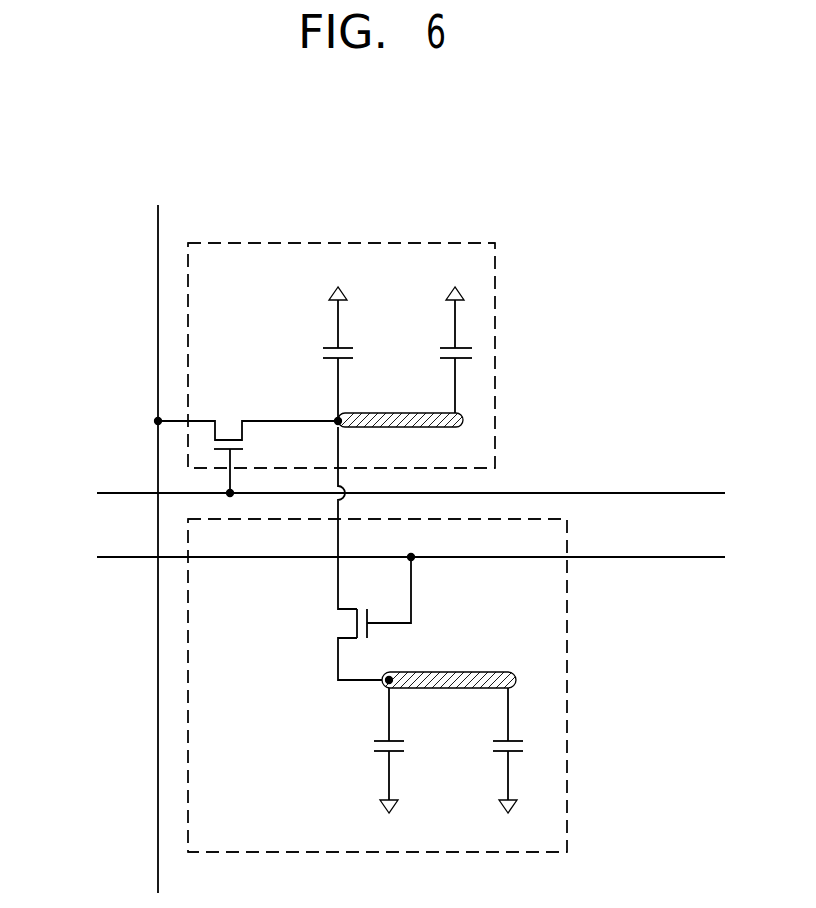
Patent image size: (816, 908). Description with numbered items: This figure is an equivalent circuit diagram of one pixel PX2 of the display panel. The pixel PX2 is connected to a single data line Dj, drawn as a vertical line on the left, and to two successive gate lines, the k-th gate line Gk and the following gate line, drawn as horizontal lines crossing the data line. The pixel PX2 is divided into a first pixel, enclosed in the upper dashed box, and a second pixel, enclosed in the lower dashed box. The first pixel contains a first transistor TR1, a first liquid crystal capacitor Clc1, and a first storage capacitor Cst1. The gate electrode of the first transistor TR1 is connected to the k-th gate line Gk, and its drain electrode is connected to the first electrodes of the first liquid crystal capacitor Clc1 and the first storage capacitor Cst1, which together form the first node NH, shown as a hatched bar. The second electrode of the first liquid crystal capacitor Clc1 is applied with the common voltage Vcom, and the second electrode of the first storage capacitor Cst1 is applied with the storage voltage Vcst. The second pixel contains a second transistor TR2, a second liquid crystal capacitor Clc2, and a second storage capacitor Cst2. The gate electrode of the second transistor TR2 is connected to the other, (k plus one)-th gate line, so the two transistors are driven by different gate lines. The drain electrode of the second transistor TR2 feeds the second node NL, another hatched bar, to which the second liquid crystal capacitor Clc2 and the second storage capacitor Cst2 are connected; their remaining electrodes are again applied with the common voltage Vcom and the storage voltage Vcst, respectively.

The data line Dj is at (156, 536).
The k-th gate line Gk is at (396, 495).
The pixel PX2 is at (558, 177).
The first transistor TR1 is at (250, 433).
The second transistor TR2 is at (373, 633).
The first liquid crystal capacitor Clc1 is at (310, 381).
The first storage capacitor Cst1 is at (428, 381).
The second liquid crystal capacitor Clc2 is at (362, 724).
The second storage capacitor Cst2 is at (479, 724).
The first node NH is at (401, 434).
The second node NL is at (451, 695).
The common voltage Vcom is at (363, 550).
The storage voltage Vcst is at (481, 550).